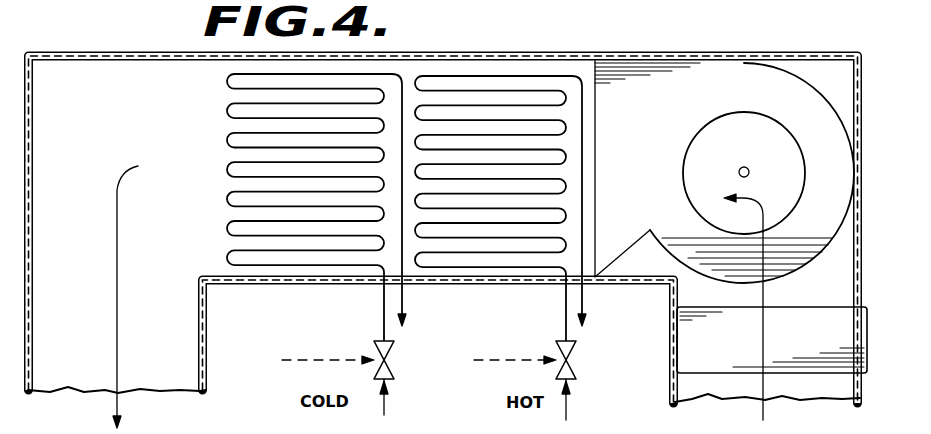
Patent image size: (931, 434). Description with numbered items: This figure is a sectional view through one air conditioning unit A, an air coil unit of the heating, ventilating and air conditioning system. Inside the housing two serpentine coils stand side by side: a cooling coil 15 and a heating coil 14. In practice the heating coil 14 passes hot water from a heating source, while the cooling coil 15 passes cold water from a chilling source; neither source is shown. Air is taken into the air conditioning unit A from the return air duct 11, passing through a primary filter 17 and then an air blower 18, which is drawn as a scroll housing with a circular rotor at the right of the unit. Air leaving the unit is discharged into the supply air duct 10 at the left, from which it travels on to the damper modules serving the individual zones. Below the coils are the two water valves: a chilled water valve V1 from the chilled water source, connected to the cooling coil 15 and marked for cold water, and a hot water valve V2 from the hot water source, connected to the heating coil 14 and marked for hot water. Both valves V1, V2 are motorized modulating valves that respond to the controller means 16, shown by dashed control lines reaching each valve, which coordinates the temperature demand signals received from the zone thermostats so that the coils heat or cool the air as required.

The air conditioning unit A is at (616, 56).
The supply air duct 10 is at (101, 313).
The return air duct 11 is at (808, 386).
The heating coil 14 is at (518, 91).
The cooling coil 15 is at (381, 96).
The controller means 16 is at (403, 363).
The primary filter 17 is at (745, 343).
The air blower 18 is at (763, 94).
The chilled water valve V1 is at (398, 369).
The hot water valve V2 is at (583, 369).